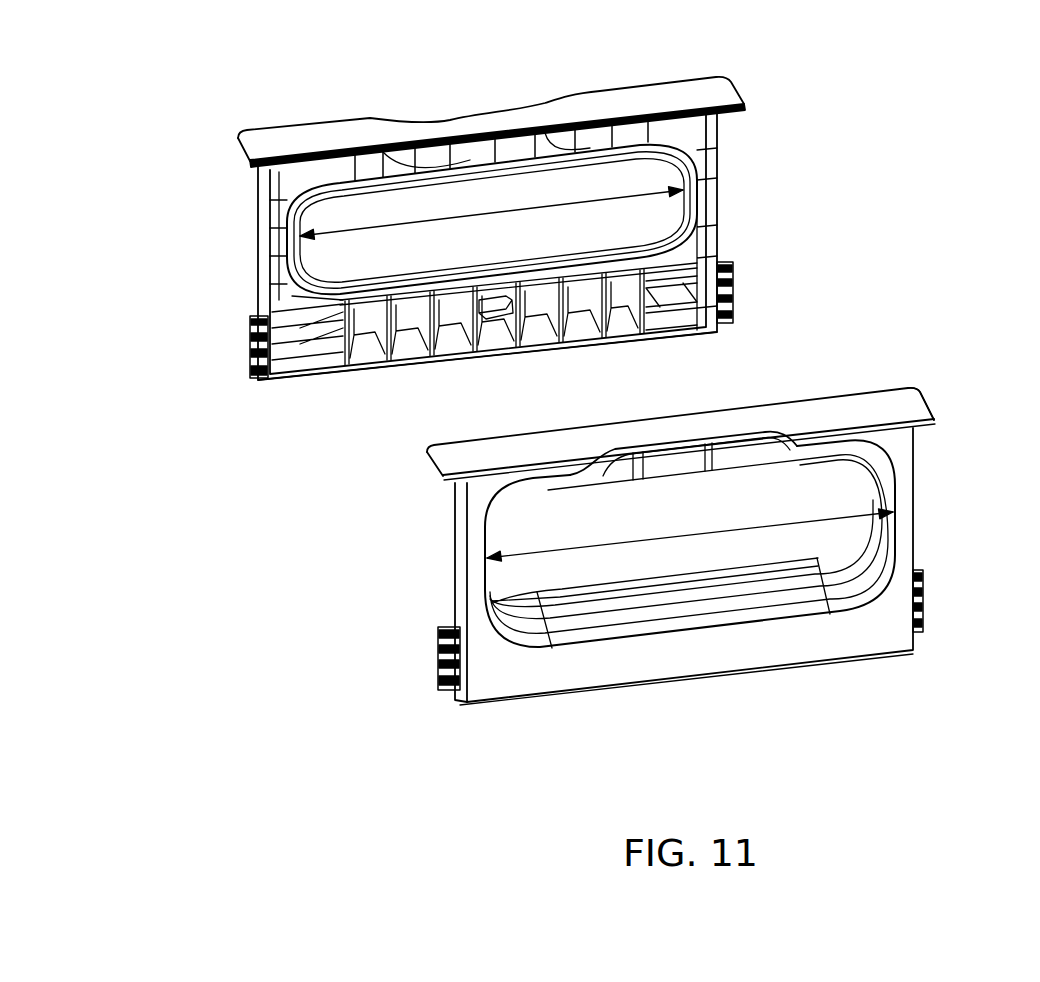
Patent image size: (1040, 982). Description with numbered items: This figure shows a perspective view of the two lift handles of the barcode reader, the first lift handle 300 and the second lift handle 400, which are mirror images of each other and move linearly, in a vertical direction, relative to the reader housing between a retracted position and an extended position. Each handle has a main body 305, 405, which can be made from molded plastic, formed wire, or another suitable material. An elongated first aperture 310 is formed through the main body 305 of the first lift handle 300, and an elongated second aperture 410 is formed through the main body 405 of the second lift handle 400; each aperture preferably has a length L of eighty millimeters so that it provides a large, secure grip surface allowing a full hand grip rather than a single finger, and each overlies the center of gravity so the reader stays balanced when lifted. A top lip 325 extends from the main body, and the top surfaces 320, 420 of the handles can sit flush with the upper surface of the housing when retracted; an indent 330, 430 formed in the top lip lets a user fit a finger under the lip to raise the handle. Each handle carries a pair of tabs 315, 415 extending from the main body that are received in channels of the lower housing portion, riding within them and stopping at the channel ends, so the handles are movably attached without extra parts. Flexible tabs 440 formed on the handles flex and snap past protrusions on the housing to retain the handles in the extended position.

The first lift handle 300 is at (703, 714).
The main body 305 is at (775, 637).
The first aperture 310 is at (508, 521).
The tabs 315 is at (437, 663).
The top surface 320 is at (851, 393).
The top lip 325 is at (929, 415).
The indent 330 is at (676, 421).
The second lift handle 400 is at (296, 106).
The main body 405 is at (266, 246).
The second aperture 410 is at (676, 166).
The tabs 415 is at (248, 354).
The top surface 420 is at (646, 86).
The indent 430 is at (474, 100).
The flexible tabs 440 is at (486, 312).